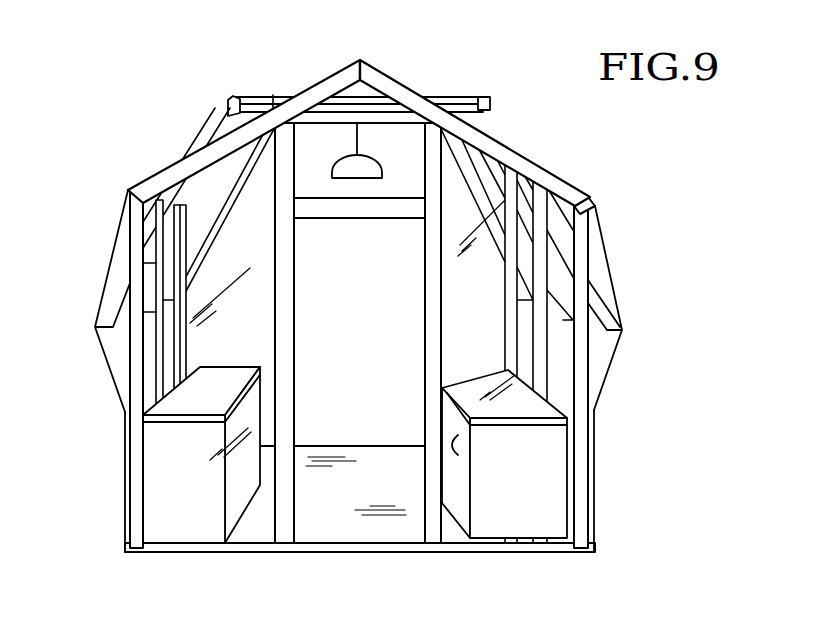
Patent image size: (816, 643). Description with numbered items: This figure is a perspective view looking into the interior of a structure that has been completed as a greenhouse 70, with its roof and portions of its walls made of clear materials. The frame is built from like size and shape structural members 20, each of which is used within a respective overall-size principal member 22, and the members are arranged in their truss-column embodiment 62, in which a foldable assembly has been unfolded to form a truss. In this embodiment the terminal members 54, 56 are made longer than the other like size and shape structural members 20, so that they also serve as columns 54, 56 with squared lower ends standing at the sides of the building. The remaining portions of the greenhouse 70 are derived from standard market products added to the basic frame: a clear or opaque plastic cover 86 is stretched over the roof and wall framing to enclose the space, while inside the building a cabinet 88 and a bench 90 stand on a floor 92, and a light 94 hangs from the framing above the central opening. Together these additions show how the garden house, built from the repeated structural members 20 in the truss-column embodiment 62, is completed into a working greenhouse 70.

The like size and shape structural member 20 is at (533, 159).
The principal member 22 is at (228, 123).
The terminal member serving as column 54 is at (128, 491).
The terminal member serving as column 56 is at (595, 476).
The truss-column embodiment 62 is at (413, 88).
The greenhouse 70 is at (595, 433).
The clear or opaque plastic cover 86 is at (522, 125).
The cabinet 88 is at (552, 512).
The bench 90 is at (155, 451).
The floor 92 is at (338, 532).
The light 94 is at (370, 172).